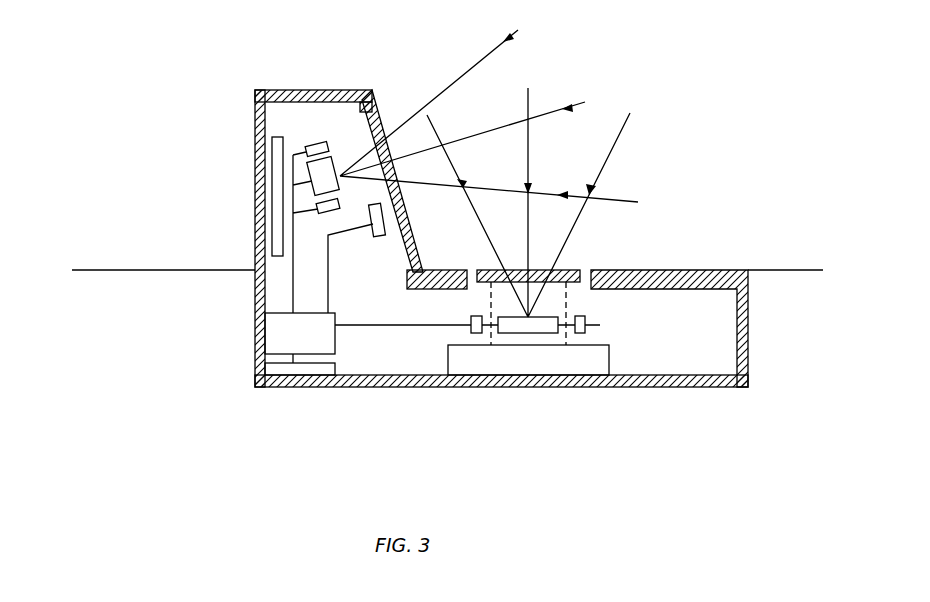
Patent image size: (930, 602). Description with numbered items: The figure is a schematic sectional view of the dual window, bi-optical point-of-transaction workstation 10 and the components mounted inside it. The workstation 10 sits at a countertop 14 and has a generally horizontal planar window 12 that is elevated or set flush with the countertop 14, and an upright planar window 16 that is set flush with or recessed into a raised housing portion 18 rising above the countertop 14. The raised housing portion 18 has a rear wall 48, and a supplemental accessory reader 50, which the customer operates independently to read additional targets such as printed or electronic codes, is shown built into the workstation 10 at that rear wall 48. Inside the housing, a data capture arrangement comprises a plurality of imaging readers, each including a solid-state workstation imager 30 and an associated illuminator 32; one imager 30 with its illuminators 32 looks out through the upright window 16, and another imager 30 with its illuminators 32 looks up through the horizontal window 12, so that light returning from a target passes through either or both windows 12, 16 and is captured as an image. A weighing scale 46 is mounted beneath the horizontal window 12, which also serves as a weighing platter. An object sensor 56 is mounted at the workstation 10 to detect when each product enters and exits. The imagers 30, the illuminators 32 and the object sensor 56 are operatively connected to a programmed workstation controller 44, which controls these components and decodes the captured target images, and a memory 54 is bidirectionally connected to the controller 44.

The point-of-transaction workstation 10 is at (690, 220).
The horizontal planar window 12 is at (567, 270).
The countertop 14 is at (160, 270).
The upright planar window 16 is at (380, 120).
The raised housing portion 18 is at (312, 97).
The workstation imager 30 is at (568, 432).
The illuminator 32 is at (672, 402).
The workstation controller 44 is at (285, 342).
The weighing scale 46 is at (453, 358).
The rear wall 48 is at (254, 142).
The accessory reader 50 is at (272, 138).
The memory 54 is at (277, 370).
The object sensor 56 is at (383, 232).